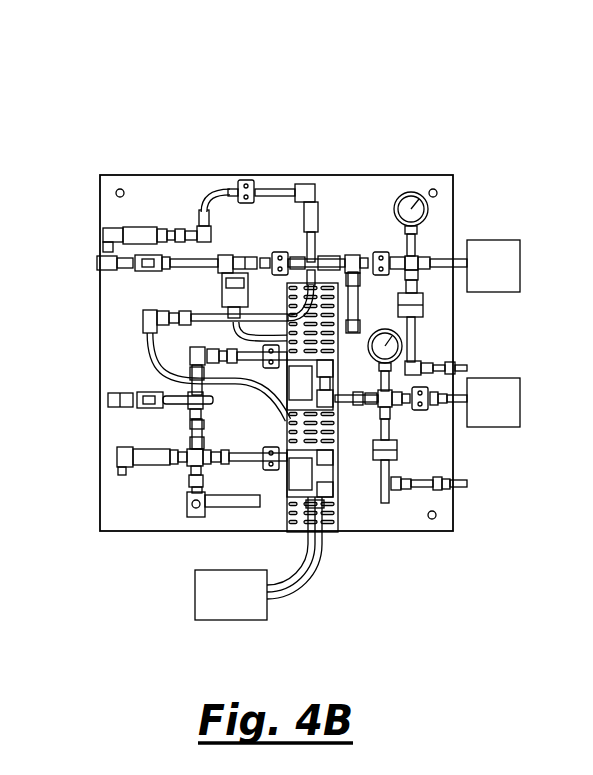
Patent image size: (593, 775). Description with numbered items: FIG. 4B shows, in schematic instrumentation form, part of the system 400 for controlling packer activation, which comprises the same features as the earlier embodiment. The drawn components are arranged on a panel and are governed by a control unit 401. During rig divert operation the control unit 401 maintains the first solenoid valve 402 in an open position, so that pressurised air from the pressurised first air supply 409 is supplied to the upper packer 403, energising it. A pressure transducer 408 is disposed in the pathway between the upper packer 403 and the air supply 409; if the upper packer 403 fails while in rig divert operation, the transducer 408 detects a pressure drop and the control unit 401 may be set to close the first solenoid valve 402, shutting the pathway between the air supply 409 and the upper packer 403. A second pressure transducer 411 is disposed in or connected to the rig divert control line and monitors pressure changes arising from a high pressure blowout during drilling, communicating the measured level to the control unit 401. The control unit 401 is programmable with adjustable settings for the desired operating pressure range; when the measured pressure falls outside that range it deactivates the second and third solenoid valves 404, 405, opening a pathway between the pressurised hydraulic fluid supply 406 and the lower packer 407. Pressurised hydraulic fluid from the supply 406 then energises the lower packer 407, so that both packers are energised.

The system 400 is at (414, 104).
The control unit 401 is at (210, 590).
The first solenoid valve 402 is at (238, 280).
The upper packer 403 is at (489, 245).
The second solenoid valve 404 is at (327, 478).
The third solenoid valve 405 is at (325, 376).
The pressurised hydraulic fluid supply 406 is at (108, 399).
The lower packer 407 is at (489, 418).
The pressure transducer 408 is at (148, 318).
The pressurised first air supply 409 is at (93, 264).
The second pressure transducer 411 is at (120, 456).